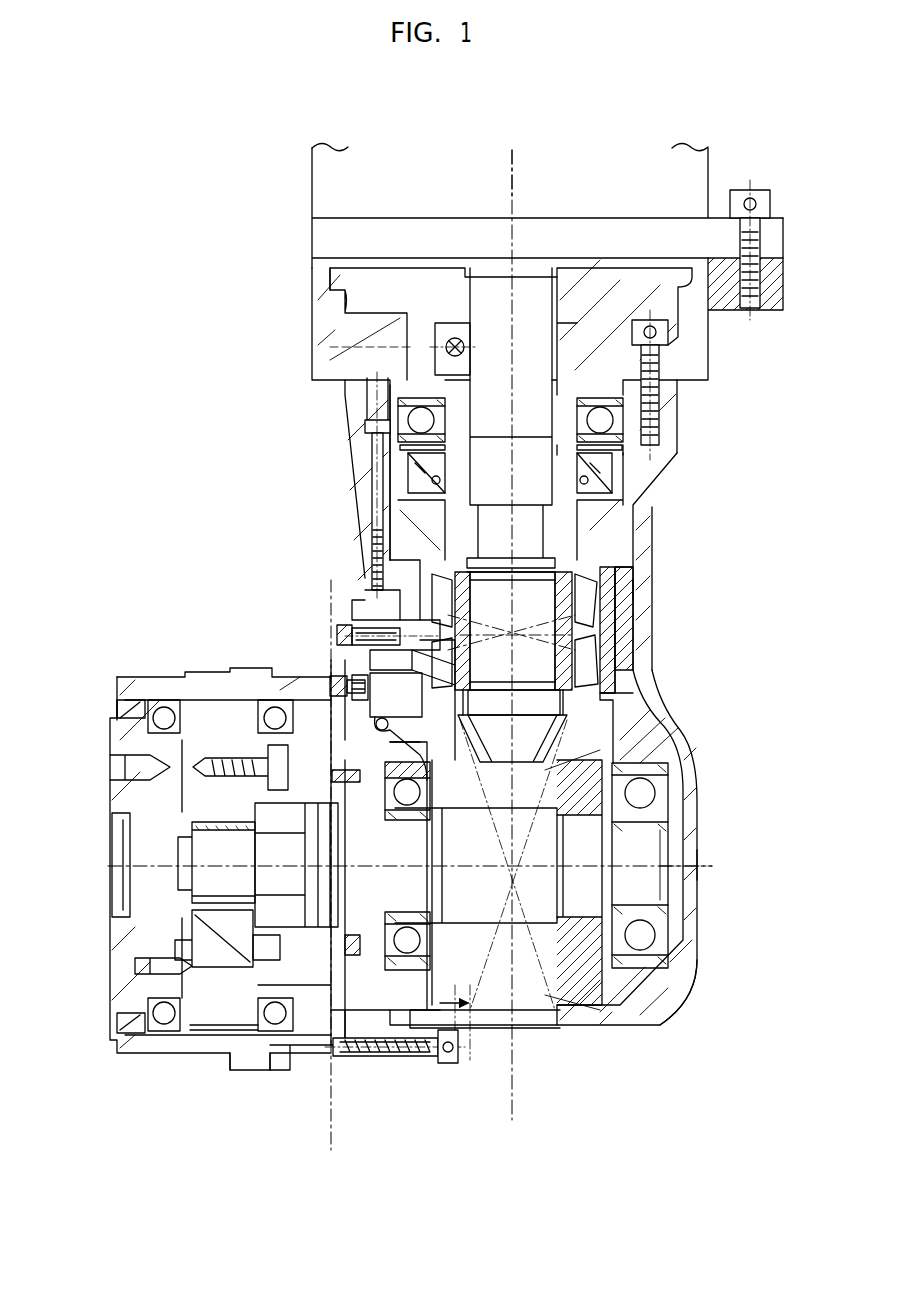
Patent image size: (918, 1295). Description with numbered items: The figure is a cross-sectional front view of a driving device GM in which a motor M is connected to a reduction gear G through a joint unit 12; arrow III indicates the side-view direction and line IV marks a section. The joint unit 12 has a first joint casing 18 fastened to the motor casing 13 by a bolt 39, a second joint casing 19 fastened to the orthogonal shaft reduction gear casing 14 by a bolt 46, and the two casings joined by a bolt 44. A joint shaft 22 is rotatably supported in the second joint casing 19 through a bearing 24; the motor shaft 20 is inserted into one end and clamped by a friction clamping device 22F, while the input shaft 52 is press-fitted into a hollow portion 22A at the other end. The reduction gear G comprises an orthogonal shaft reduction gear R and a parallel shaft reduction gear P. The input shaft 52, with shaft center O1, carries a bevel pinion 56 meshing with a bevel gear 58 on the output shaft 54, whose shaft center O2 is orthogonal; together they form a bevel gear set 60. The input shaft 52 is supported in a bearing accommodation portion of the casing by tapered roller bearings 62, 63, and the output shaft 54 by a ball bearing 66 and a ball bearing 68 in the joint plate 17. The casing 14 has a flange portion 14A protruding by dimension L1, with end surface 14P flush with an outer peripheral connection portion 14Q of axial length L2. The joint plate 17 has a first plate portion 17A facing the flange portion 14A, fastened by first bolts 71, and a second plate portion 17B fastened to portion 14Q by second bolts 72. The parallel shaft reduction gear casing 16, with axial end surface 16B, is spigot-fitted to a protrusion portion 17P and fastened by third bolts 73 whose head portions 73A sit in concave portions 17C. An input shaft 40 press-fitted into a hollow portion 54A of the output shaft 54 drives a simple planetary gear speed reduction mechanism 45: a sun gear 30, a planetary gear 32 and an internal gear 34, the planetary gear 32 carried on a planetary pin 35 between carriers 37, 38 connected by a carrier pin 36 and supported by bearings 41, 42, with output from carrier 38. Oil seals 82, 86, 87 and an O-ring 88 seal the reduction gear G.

The driving device GM is at (205, 154).
The motor M is at (314, 176).
The shaft center O1 is at (514, 193).
The motor casing 13 is at (700, 172).
The bolt 39 is at (761, 198).
The first joint casing 18 is at (324, 296).
The friction clamping device 22F is at (442, 334).
The bolt 44 is at (638, 328).
The motor shaft 20 is at (548, 372).
The joint shaft 22 is at (655, 387).
The joint unit 12 is at (340, 406).
The bearing 24 is at (605, 422).
The second joint casing 19 is at (360, 460).
The oil seal 82 is at (610, 480).
The bolt 46 is at (368, 500).
The hollow portion 22A is at (556, 532).
The input shaft 52 is at (560, 572).
The reduction gear G is at (716, 571).
The section line IV is at (326, 583).
The second bolt 72 is at (362, 626).
The tapered roller bearing 62 is at (600, 597).
The first plate portion 17A is at (322, 644).
The second plate portion 17B is at (328, 650).
The tapered roller bearing 63 is at (600, 668).
The parallel shaft reduction gear P is at (130, 666).
The parallel shaft reduction gear casing 16 is at (173, 676).
The carrier pin 36 is at (204, 756).
The third bolt 73 is at (304, 664).
The axial length L2 is at (517, 631).
The outer peripheral connection portion 14Q is at (414, 663).
The oil seal 87 is at (120, 690).
The bevel gear set 60 is at (586, 712).
The concave portion 17C is at (396, 695).
The head portion 73A is at (513, 705).
The arrow III is at (815, 724).
The orthogonal shaft reduction gear casing 14 is at (660, 740).
The end surface 14P is at (382, 748).
The O-ring 88 is at (358, 774).
The simple planetary gear speed reduction mechanism 45 is at (204, 812).
The input shaft 40 is at (299, 832).
The bevel pinion 56 is at (474, 750).
The shaft center O2 is at (696, 881).
The sun gear 30 is at (205, 885).
The planetary pin 35 is at (134, 965).
The hollow portion 54A is at (280, 924).
The axial end surface 16B is at (298, 990).
The oil seal 86 is at (400, 967).
The carrier 38 is at (116, 1016).
The bearing 42 is at (160, 1030).
The planetary gear 32 is at (200, 1035).
The internal gear 34 is at (216, 1037).
The protrusion portion 17P is at (307, 1064).
The carrier 37 is at (240, 1082).
The bearing 41 is at (275, 1042).
The flange portion 14A is at (352, 1068).
The joint plate 17 is at (336, 1065).
The ball bearing 68 is at (395, 1058).
The first bolt 71 is at (444, 1064).
The dimension L1 is at (455, 1015).
The output shaft 54 is at (476, 1012).
The bevel gear 58 is at (523, 932).
The ball bearing 66 is at (640, 992).
The orthogonal shaft reduction gear R is at (688, 1006).